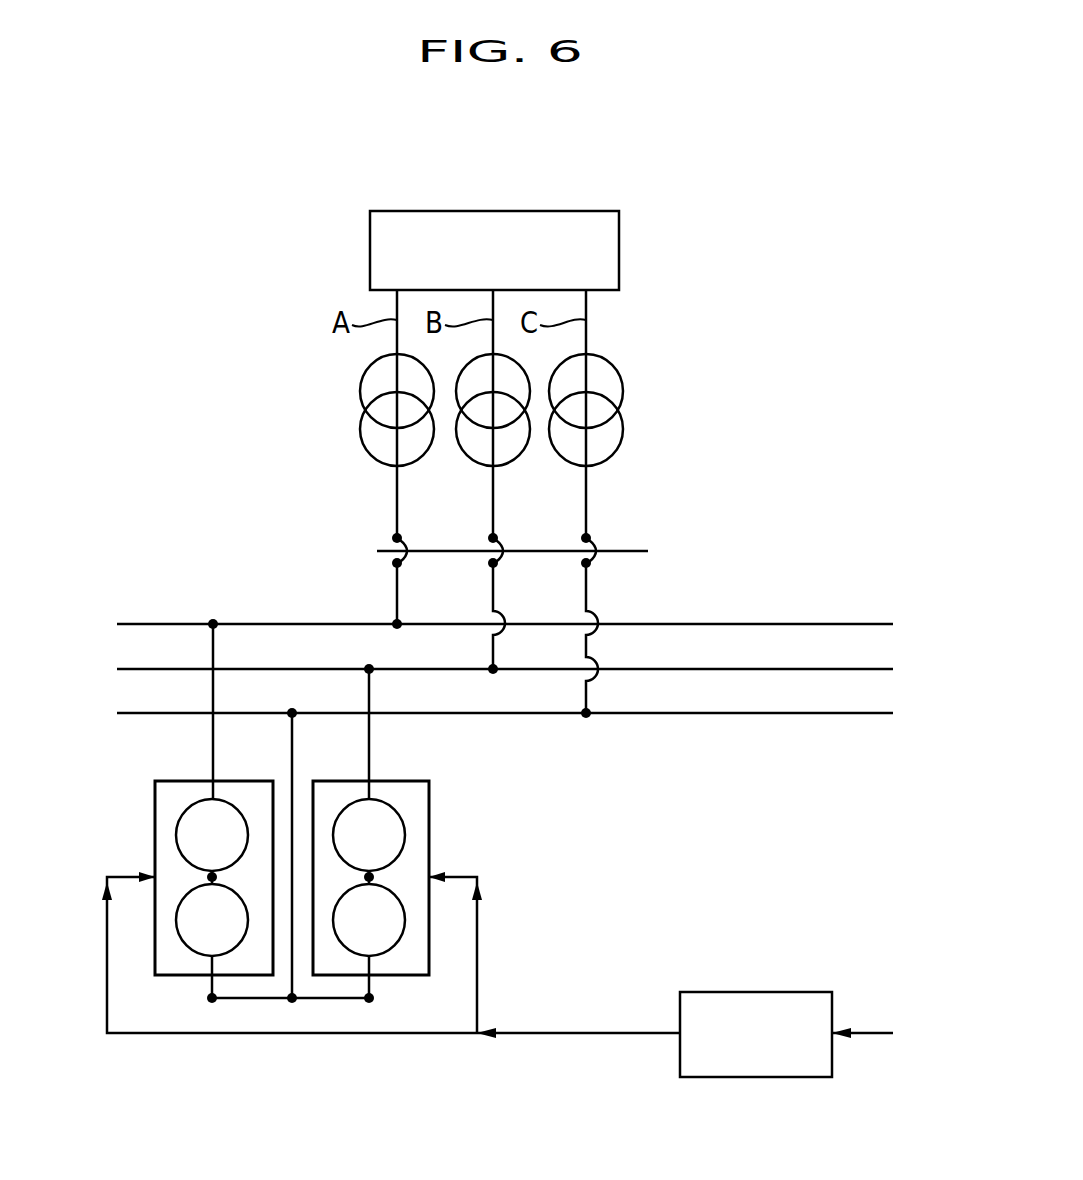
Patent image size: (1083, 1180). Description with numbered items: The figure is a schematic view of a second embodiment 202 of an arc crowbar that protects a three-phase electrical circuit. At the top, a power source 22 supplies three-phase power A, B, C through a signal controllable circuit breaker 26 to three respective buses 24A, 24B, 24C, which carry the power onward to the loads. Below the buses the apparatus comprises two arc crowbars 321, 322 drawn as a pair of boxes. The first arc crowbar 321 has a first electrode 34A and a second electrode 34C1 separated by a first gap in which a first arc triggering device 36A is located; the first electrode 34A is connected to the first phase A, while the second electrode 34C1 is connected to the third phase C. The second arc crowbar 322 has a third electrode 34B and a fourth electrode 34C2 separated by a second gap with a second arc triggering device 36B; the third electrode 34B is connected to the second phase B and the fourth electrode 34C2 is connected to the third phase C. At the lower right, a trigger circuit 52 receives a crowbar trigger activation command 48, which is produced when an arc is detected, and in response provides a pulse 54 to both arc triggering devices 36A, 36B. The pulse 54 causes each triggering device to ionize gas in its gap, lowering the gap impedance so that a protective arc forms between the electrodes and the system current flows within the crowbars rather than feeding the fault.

The second embodiment of arc crowbar 202 is at (222, 350).
The power source 22 is at (619, 240).
The signal controllable circuit breaker 26 is at (377, 551).
The bus 24A is at (117, 624).
The bus 24B is at (117, 669).
The bus 24C is at (117, 713).
The first arc crowbar 321 is at (170, 977).
The second arc crowbar 322 is at (407, 977).
The first electrode 34A is at (182, 815).
The first arc triggering device 36A is at (207, 877).
The second electrode 34C1 is at (178, 925).
The third electrode 34B is at (405, 830).
The second arc triggering device 36B is at (375, 877).
The fourth electrode 34C2 is at (405, 925).
The pulse 54 is at (107, 995).
The trigger circuit 52 is at (760, 992).
The crowbar trigger activation command 48 is at (880, 1033).